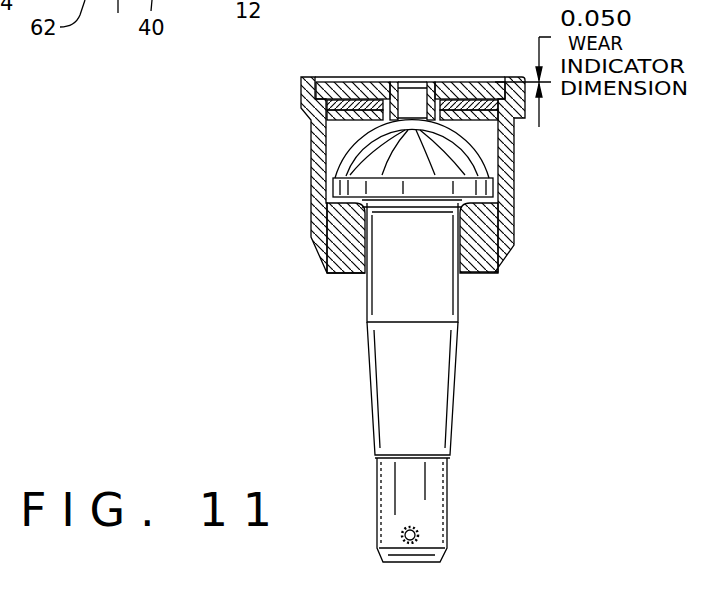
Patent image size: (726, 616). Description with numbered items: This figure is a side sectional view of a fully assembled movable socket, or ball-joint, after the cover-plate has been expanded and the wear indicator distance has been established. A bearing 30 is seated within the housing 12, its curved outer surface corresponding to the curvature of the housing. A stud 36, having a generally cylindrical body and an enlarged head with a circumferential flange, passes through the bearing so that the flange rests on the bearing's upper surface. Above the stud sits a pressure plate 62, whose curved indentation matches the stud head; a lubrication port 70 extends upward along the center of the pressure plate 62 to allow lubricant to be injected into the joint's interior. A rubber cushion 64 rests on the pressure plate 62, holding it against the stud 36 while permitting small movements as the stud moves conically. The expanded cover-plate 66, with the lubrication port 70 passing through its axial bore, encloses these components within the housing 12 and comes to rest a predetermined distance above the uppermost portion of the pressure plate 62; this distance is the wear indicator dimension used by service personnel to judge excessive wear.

The housing 12 is at (528, 194).
The bearing 30 is at (492, 262).
The stud 36 is at (479, 370).
The pressure plate 62 is at (342, 125).
The rubber cushion 64 is at (326, 111).
The cover-plate 66 is at (342, 92).
The lubrication port 70 is at (399, 66).